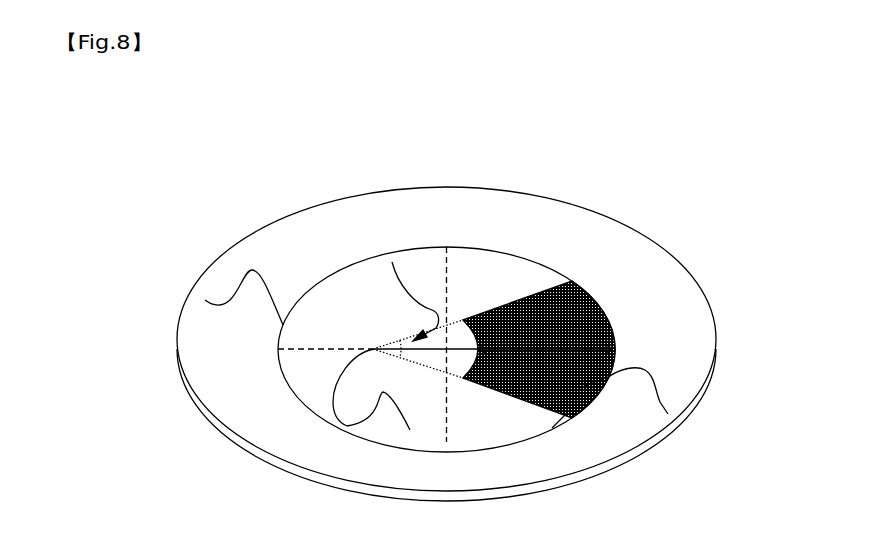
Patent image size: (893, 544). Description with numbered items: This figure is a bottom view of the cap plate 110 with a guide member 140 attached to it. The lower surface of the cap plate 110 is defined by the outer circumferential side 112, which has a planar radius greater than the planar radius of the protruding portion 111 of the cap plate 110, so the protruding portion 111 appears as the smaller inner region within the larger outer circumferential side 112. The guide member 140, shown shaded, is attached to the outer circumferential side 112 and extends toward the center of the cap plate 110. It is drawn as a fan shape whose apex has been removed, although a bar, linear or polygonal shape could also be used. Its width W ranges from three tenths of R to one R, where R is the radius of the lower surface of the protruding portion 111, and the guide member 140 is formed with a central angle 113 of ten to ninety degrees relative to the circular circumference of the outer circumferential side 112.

The cap plate 110 is at (150, 181).
The protruding portion 111 is at (358, 428).
The outer circumferential side 112 is at (205, 300).
The central angle 113 is at (392, 262).
The guide member 140 is at (668, 414).